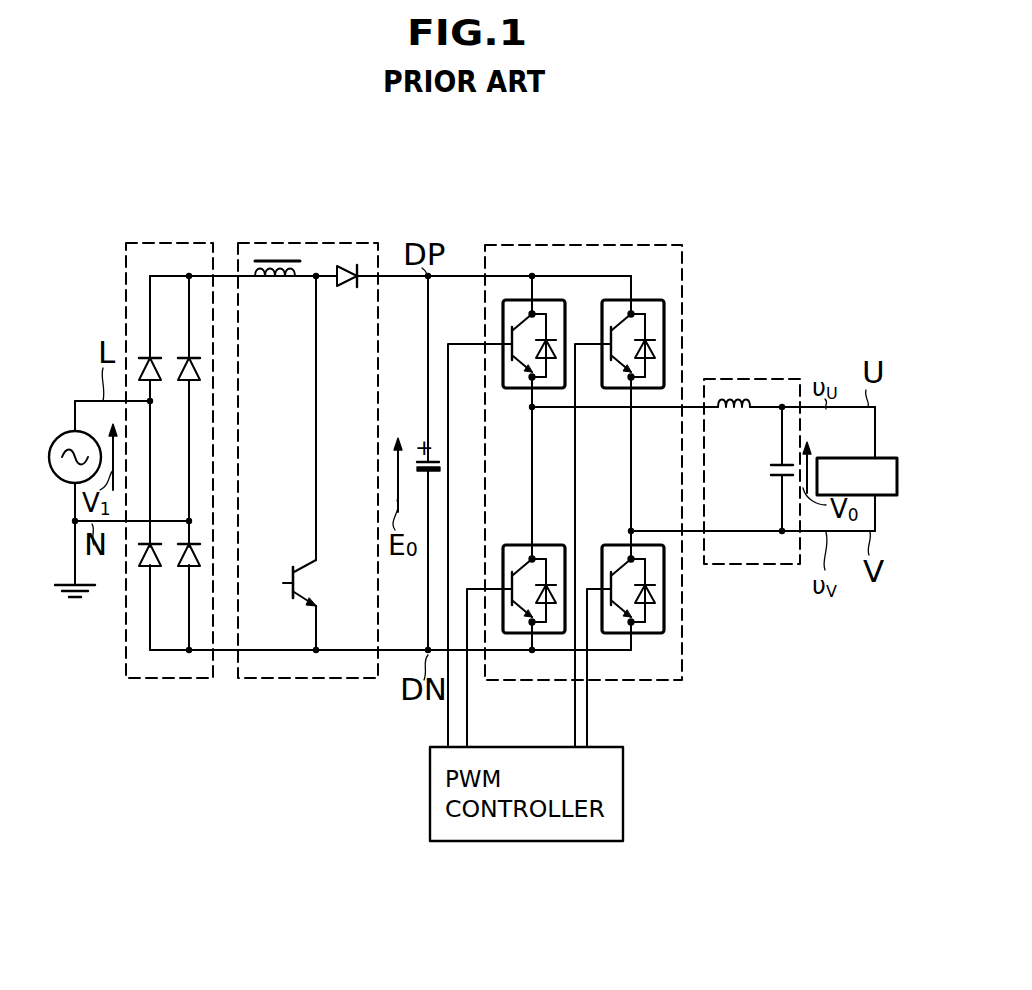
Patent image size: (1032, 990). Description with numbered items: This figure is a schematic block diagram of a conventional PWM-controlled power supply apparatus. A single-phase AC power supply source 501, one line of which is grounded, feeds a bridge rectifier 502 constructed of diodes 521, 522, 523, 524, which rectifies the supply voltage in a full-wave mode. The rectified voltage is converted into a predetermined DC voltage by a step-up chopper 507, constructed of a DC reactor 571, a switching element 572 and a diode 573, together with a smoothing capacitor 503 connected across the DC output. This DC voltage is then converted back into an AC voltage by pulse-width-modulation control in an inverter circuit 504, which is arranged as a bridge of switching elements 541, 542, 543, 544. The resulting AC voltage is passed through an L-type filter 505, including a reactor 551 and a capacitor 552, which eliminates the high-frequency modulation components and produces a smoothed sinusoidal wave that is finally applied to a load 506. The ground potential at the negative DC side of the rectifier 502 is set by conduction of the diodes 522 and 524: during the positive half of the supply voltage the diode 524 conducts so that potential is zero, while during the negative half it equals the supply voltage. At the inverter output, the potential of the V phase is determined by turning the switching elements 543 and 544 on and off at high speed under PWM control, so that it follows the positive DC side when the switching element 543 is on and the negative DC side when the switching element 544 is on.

The single-phase AC power supply source 501 is at (68, 432).
The bridge rectifier 502 is at (165, 243).
The smoothing capacitor 503 is at (426, 471).
The inverter circuit 504 is at (573, 245).
The L-type filter 505 is at (767, 379).
The load 506 is at (836, 458).
The step-up chopper 507 is at (284, 243).
The diode 521 is at (150, 360).
The diode 522 is at (150, 566).
The diode 523 is at (189, 380).
The diode 524 is at (189, 566).
The switching element 541 is at (515, 389).
The switching element 542 is at (513, 544).
The switching element 543 is at (612, 389).
The switching element 544 is at (610, 544).
The reactor 551 is at (742, 409).
The capacitor 552 is at (774, 477).
The DC reactor 571 is at (273, 281).
The switching element 572 is at (306, 566).
The diode 573 is at (345, 285).